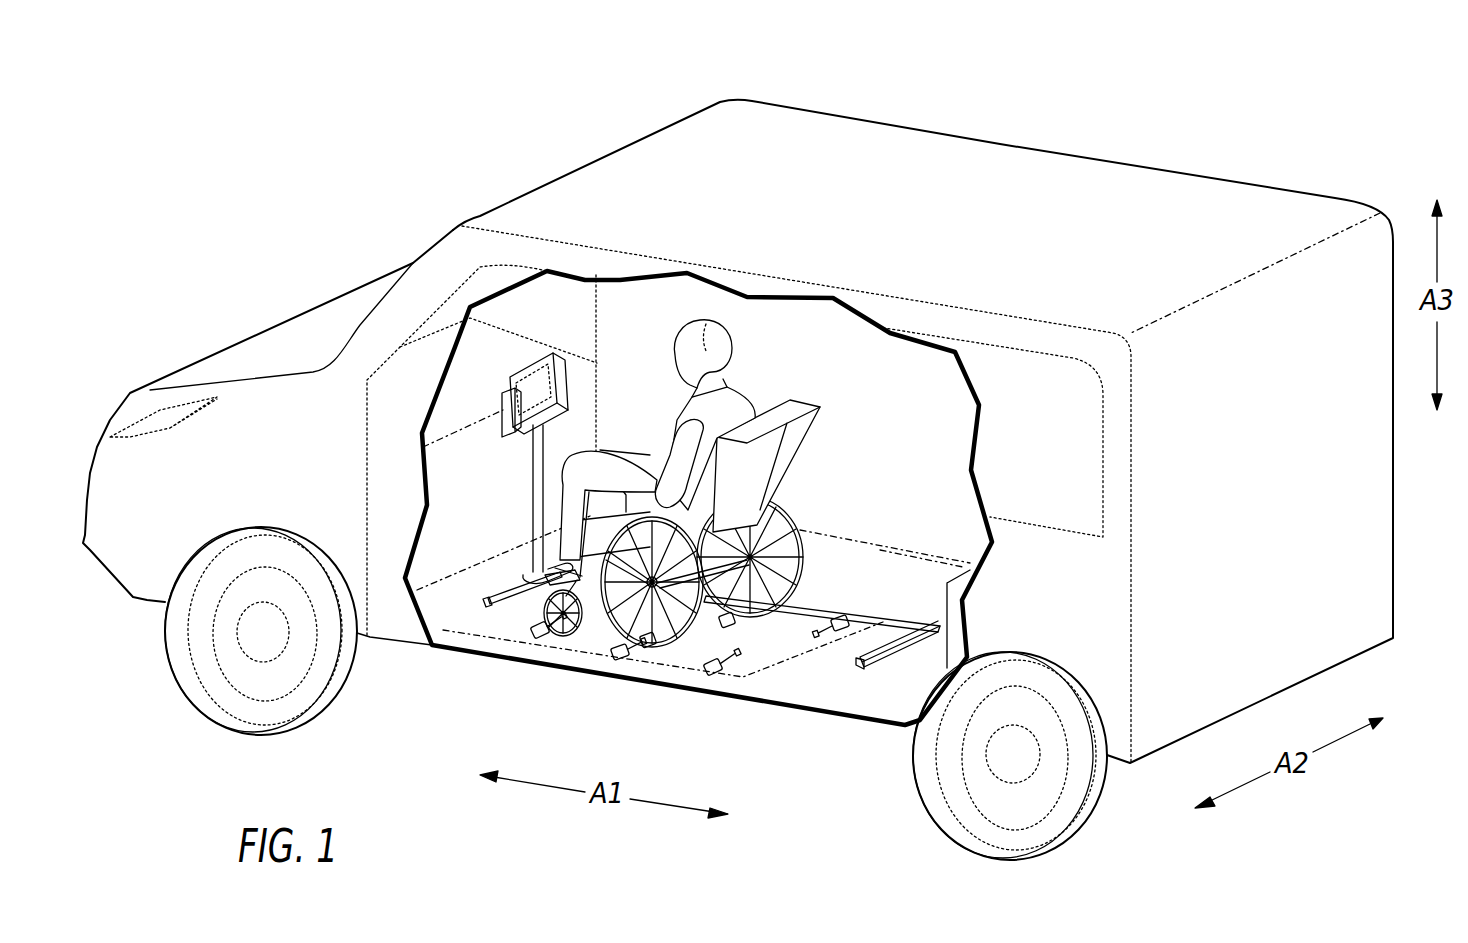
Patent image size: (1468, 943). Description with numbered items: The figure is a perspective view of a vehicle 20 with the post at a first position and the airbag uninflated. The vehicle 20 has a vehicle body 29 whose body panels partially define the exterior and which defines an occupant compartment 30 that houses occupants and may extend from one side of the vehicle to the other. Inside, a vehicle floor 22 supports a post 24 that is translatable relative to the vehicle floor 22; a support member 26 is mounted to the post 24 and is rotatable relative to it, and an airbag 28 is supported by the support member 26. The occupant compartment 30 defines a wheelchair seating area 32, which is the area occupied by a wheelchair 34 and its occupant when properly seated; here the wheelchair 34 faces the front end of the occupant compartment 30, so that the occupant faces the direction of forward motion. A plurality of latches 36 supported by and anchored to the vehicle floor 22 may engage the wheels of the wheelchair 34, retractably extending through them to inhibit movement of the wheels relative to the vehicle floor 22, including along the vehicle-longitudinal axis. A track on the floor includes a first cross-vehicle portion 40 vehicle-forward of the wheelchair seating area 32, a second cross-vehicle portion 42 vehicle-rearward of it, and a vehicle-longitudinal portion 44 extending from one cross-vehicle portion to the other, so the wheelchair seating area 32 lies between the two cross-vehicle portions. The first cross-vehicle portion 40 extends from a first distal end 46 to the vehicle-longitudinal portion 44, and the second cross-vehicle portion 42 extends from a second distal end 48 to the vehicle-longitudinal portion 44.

The vehicle 20 is at (376, 159).
The vehicle floor 22 is at (462, 593).
The post 24 is at (531, 488).
The support member 26 is at (580, 396).
The airbag 28 is at (548, 352).
The vehicle body 29 is at (300, 470).
The occupant compartment 30 is at (840, 366).
The wheelchair seating area 32 is at (750, 688).
The wheelchair 34 is at (762, 476).
The latches 36 is at (540, 634).
The first cross-vehicle portion 40 is at (502, 586).
The second cross-vehicle portion 42 is at (880, 664).
The vehicle-longitudinal portion 44 is at (900, 618).
The first distal end 46 is at (486, 607).
The second distal end 48 is at (856, 666).